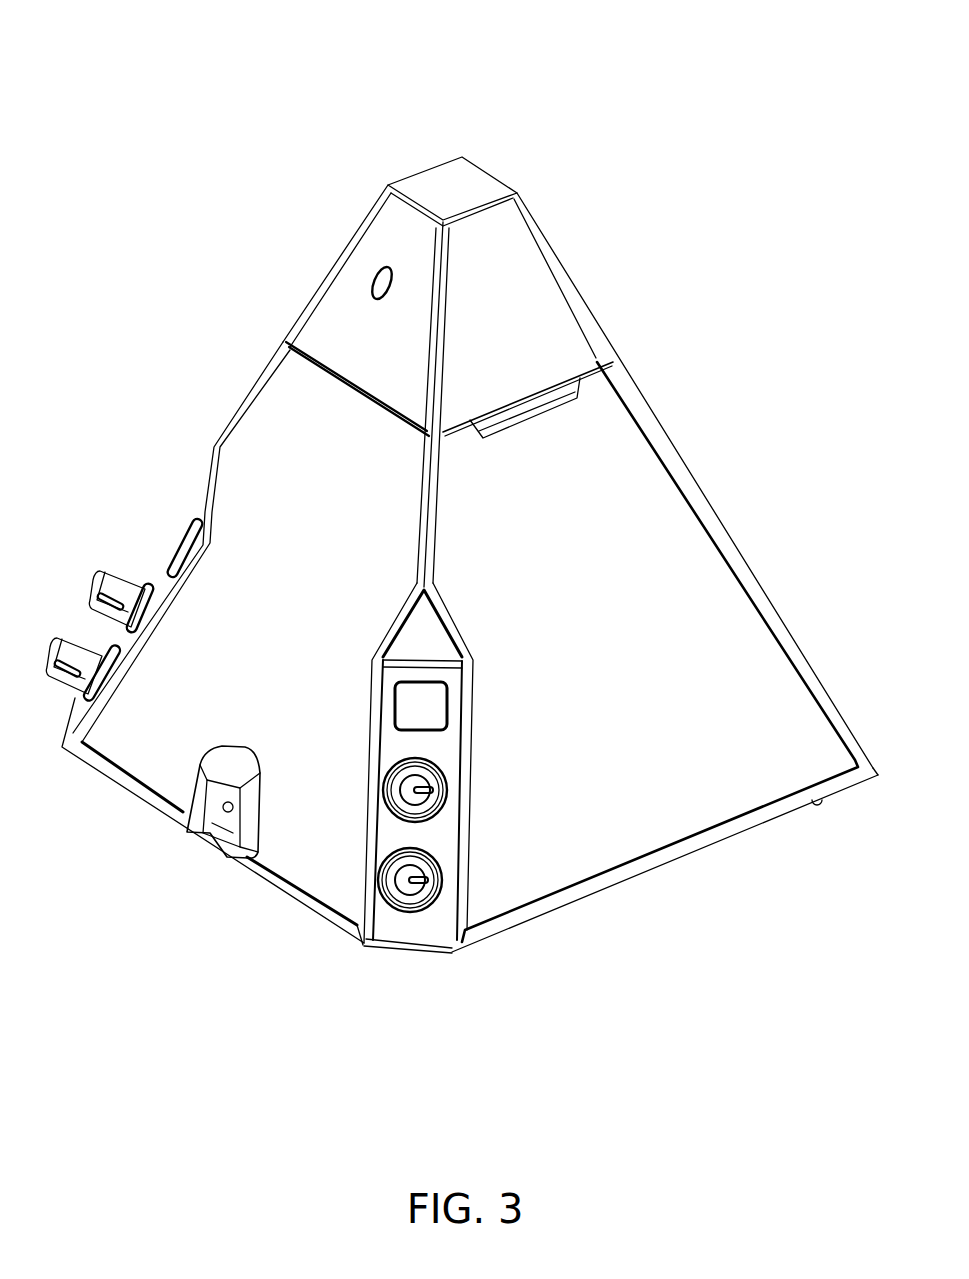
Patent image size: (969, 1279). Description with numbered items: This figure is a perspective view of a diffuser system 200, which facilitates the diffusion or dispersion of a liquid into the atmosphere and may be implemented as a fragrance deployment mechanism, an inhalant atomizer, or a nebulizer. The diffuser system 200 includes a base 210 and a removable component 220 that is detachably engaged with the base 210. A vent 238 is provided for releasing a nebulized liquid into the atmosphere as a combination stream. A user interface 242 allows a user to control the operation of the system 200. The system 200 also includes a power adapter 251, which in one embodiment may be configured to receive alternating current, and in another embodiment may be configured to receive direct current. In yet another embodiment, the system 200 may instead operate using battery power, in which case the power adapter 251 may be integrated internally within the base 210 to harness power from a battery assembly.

The diffuser system 200 is at (154, 66).
The base 210 is at (562, 712).
The removable component 220 is at (486, 334).
The vent 238 is at (368, 257).
The user interface 242 is at (63, 574).
The power adapter 251 is at (204, 856).